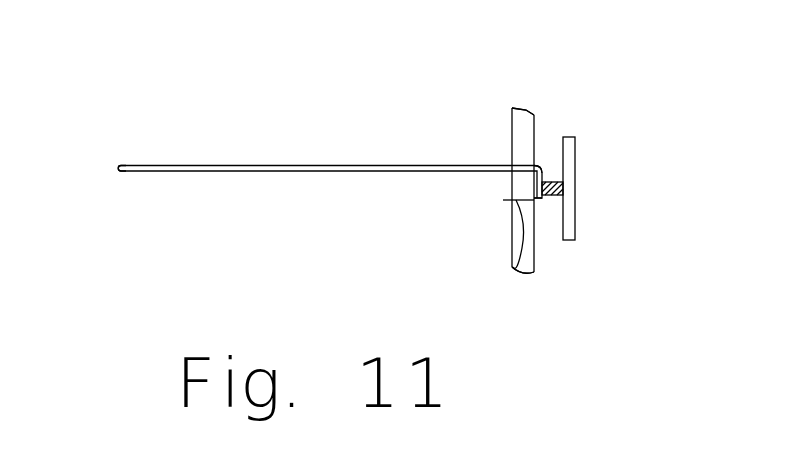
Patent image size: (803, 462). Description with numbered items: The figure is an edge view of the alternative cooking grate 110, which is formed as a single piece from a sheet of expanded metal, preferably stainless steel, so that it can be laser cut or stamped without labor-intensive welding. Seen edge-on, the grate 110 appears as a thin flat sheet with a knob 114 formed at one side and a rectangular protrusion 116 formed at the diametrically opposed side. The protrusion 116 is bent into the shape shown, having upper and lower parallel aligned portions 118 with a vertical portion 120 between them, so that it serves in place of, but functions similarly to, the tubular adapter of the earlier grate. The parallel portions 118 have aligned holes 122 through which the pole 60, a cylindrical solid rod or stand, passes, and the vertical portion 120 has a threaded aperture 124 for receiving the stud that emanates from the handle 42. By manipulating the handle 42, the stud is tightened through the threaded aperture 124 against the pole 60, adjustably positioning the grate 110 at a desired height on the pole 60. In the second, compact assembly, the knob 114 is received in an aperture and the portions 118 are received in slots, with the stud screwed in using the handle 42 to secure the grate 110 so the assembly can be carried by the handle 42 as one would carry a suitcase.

The grate 110 is at (256, 155).
The knob 114 is at (118, 170).
The pole 60 is at (534, 120).
The aligned holes 122 is at (512, 145).
The threaded aperture 124 is at (520, 171).
The parallel aligned portions 118 is at (535, 168).
The vertical portion 120 is at (546, 193).
The handle 42 is at (574, 163).
The rectangular protrusion 116 is at (506, 201).